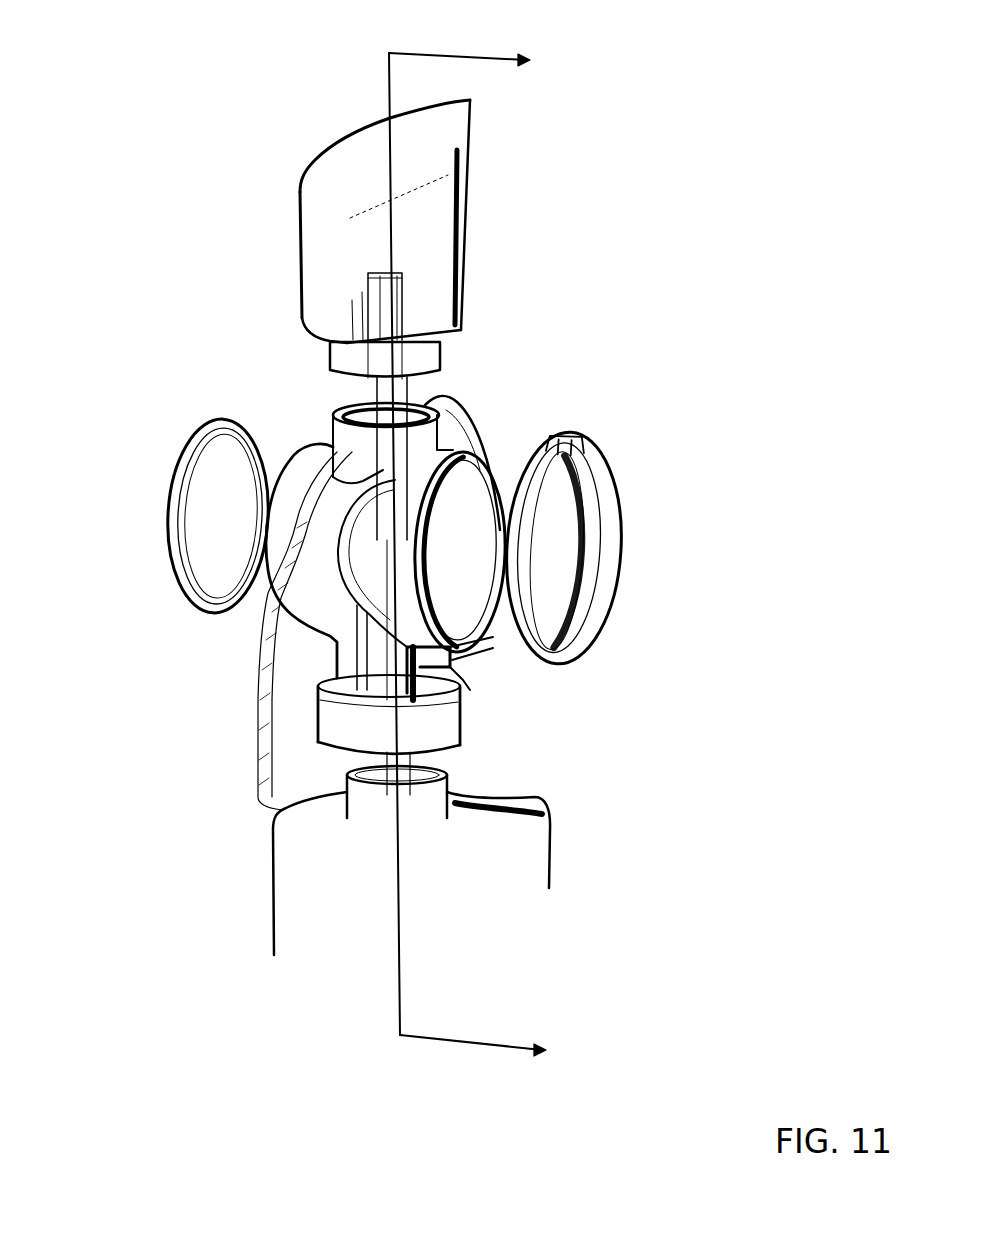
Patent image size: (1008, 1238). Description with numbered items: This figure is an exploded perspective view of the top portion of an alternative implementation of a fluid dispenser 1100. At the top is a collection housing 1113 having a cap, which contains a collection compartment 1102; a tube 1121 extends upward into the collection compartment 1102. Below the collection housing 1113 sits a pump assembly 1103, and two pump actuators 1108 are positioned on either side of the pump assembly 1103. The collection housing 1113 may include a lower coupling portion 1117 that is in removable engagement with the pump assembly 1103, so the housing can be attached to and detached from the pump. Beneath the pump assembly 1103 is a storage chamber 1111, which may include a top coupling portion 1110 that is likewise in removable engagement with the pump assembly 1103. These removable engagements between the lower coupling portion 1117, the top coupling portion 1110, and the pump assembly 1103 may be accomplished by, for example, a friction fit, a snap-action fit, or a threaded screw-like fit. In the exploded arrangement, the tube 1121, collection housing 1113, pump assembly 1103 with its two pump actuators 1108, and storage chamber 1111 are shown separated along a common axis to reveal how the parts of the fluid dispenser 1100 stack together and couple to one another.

The fluid dispenser 1100 is at (187, 118).
The collection compartment 1102 is at (337, 236).
The collection housing 1113 is at (303, 291).
The tube 1121 is at (390, 307).
The lower coupling portion 1117 is at (413, 360).
The pump assembly 1103 is at (400, 503).
The pump actuators 1108 is at (173, 497).
The top coupling portion 1110 is at (390, 810).
The storage chamber 1111 is at (513, 892).